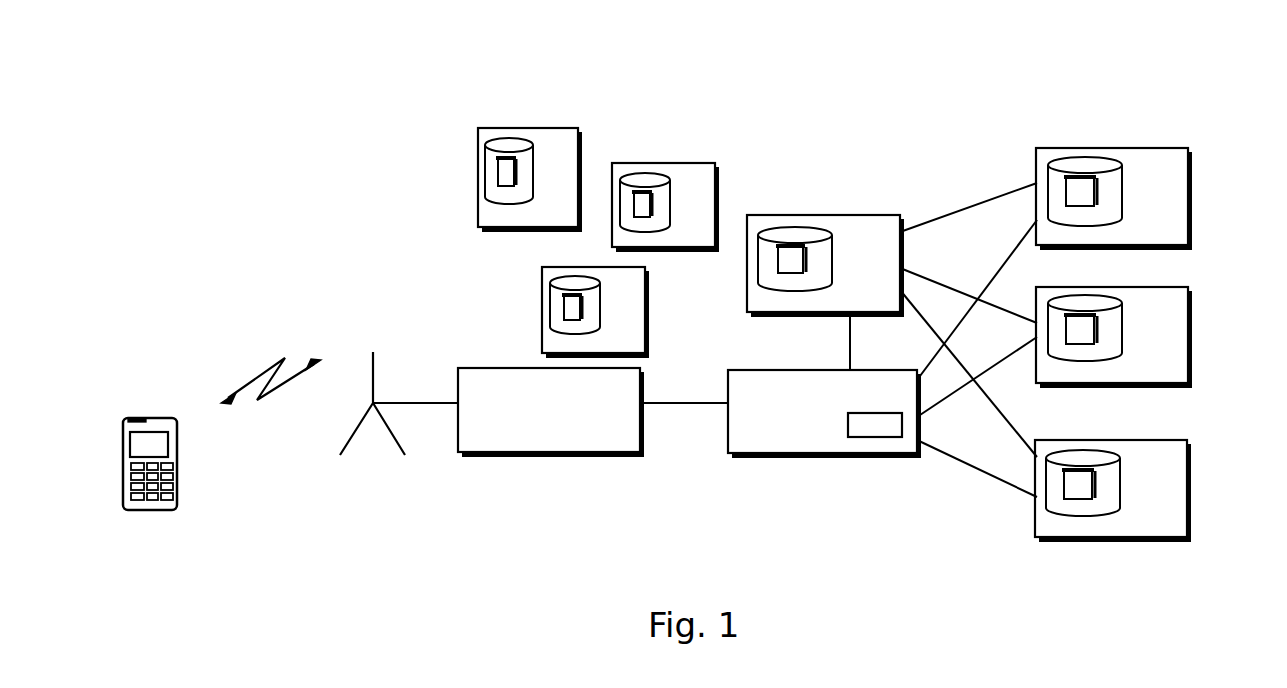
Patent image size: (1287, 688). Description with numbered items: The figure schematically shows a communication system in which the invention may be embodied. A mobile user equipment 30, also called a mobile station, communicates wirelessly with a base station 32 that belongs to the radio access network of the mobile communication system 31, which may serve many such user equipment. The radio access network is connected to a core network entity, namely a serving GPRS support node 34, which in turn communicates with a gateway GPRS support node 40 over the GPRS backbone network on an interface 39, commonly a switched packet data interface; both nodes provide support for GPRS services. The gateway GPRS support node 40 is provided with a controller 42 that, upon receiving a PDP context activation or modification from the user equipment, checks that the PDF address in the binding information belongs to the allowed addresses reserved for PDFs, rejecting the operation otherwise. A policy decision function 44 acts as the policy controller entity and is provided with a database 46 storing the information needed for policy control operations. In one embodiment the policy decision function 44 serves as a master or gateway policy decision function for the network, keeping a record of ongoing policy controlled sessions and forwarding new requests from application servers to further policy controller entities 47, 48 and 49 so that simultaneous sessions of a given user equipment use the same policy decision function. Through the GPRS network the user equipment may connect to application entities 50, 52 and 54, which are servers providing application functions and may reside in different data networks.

The mobile user equipment 30 is at (152, 507).
The mobile communication system 31 is at (422, 200).
The base station 32 is at (388, 438).
The serving GPRS support node 34 is at (507, 437).
The interface 39 is at (680, 405).
The gateway GPRS support node 40 is at (762, 437).
The controller 42 is at (882, 430).
The policy decision function 44 is at (842, 225).
The database 46 is at (792, 258).
The further policy controller entity 47 is at (513, 135).
The further policy controller entity 48 is at (588, 280).
The further policy controller entity 49 is at (675, 200).
The application entity 50 is at (1172, 183).
The application entity 52 is at (1170, 337).
The application entity 54 is at (1168, 472).